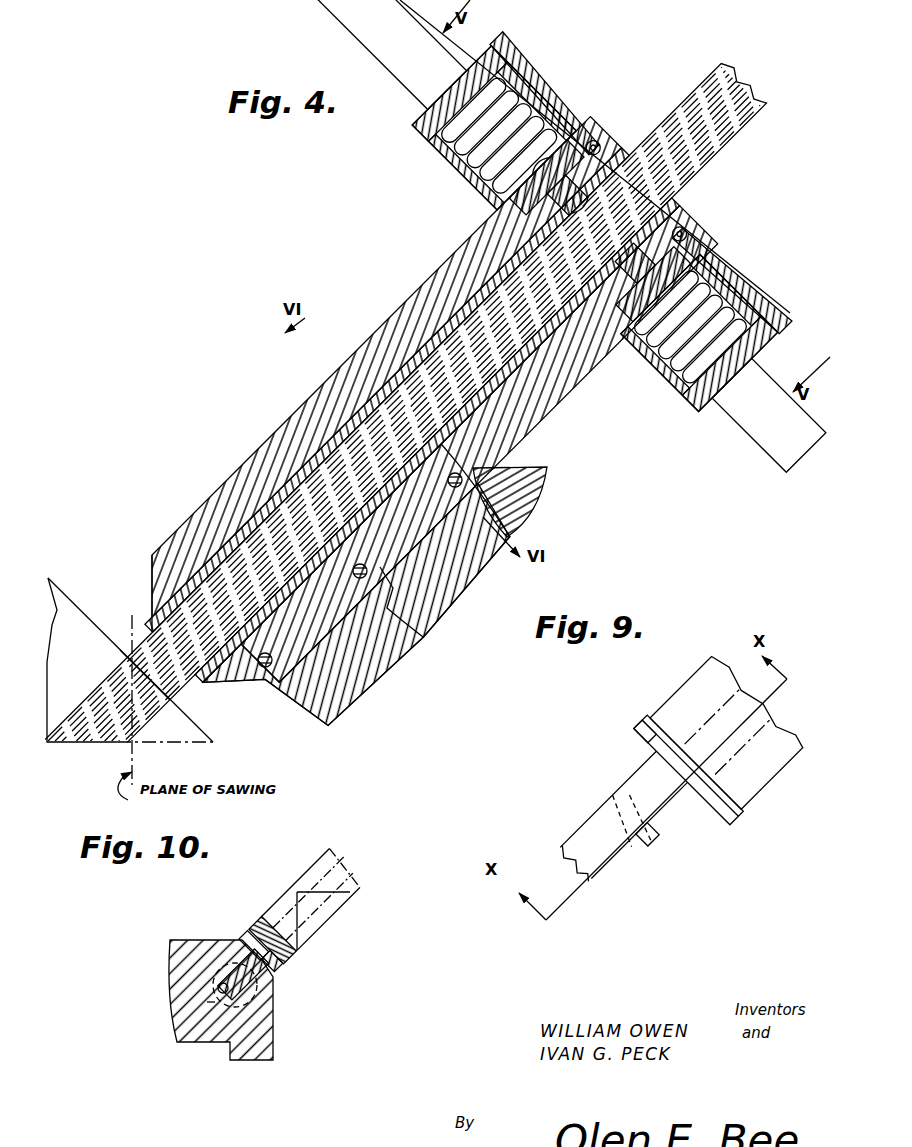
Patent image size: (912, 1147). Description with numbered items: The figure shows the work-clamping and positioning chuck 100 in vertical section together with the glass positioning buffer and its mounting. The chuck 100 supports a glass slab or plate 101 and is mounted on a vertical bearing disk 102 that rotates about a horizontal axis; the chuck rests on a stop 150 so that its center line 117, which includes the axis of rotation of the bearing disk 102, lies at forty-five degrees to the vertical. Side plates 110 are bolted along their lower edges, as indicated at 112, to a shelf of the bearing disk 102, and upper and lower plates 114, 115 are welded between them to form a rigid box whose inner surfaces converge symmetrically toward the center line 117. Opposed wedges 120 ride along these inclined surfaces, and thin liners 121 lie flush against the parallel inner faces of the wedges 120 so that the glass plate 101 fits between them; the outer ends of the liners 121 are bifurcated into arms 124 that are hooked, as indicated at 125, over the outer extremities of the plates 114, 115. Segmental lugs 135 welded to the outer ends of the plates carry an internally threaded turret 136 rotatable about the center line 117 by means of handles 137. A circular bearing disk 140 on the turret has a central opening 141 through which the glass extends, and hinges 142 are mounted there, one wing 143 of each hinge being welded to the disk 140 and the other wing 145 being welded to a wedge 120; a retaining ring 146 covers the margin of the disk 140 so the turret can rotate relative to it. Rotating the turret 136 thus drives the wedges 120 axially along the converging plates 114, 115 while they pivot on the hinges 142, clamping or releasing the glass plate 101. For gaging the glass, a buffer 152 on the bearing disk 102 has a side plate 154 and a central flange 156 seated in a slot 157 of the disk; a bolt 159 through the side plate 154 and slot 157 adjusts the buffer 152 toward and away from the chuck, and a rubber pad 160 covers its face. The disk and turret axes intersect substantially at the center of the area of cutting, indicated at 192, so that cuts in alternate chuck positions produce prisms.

In FIG. 4, the chuck 100 is at (448, 391).
In FIG. 4, the glass slab or plate 101 is at (718, 147).
In FIG. 9, the glass slab or plate 101 is at (706, 661).
In FIG. 10, the glass slab or plate 101 is at (340, 907).
In FIG. 4, the bearing disk 102 is at (323, 727).
In FIG. 9, the bearing disk 102 is at (610, 865).
In FIG. 10, the bearing disk 102 is at (263, 1033).
In FIG. 4, the side plates 110 is at (173, 580).
In FIG. 4, the bolted connection 112 is at (432, 622).
In FIG. 4, the upper plate 114 is at (240, 480).
In FIG. 4, the lower plate 115 is at (533, 440).
In FIG. 4, the center line 117 is at (153, 673).
In FIG. 4, the wedges 120 is at (373, 380).
In FIG. 4, the liners 121 is at (410, 460).
In FIG. 4, the arms 124 is at (520, 248).
In FIG. 4, the hooked portions 125 is at (552, 170).
In FIG. 4, the segmental lugs 135 is at (484, 193).
In FIG. 4, the turret 136 is at (413, 125).
In FIG. 4, the handles 137 is at (357, 37).
In FIG. 4, the bearing disk 140 is at (517, 70).
In FIG. 4, the central opening 141 is at (683, 228).
In FIG. 4, the hinges 142 is at (570, 105).
In FIG. 4, the hinge wing 143 is at (573, 78).
In FIG. 4, the hinge wing 145 is at (578, 195).
In FIG. 4, the retaining ring 146 is at (790, 310).
In FIG. 4, the stop 150 is at (513, 505).
In FIG. 9, the buffer 152 is at (643, 730).
In FIG. 10, the buffer 152 is at (270, 958).
In FIG. 9, the side plate 154 is at (590, 828).
In FIG. 10, the side plate 154 is at (277, 962).
In FIG. 9, the central flange 156 is at (683, 792).
In FIG. 10, the central flange 156 is at (240, 938).
In FIG. 9, the slot 157 is at (643, 842).
In FIG. 10, the slot 157 is at (207, 1002).
In FIG. 9, the bolt 159 is at (610, 793).
In FIG. 10, the bolt 159 is at (223, 990).
In FIG. 10, the pad 160 is at (297, 948).
In FIG. 4, the center of the area of cutting 192 is at (133, 703).